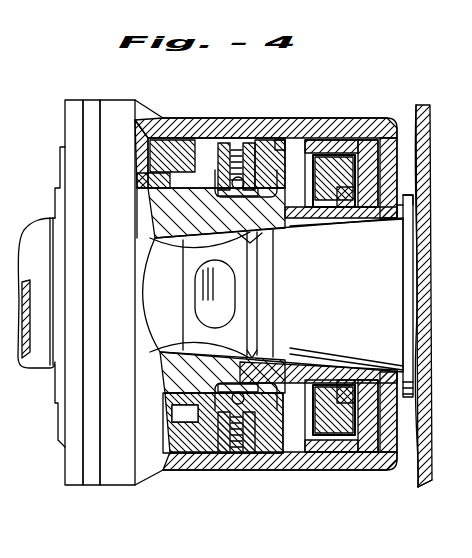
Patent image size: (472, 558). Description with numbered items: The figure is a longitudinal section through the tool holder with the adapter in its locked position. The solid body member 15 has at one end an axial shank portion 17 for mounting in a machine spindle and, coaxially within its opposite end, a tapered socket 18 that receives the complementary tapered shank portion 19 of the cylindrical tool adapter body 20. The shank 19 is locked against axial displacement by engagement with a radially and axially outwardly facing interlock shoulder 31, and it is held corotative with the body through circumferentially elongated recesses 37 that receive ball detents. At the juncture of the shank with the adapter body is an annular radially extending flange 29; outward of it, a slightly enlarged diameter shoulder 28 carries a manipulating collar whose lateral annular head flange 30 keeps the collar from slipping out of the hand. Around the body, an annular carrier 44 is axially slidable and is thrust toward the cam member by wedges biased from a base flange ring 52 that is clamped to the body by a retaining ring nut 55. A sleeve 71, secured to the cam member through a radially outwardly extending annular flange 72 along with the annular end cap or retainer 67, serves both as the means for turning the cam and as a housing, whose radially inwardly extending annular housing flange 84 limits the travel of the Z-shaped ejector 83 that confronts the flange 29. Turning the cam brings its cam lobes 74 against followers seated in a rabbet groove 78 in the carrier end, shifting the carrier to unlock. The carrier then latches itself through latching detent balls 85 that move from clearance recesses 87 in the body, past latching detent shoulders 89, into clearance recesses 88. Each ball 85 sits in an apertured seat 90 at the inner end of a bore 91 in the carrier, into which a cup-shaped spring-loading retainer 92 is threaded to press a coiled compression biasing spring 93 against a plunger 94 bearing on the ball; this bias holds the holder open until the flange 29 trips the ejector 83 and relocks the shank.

The annular end cap or retainer 67 is at (74, 113).
The radially outwardly extending annular flange 72 is at (91, 110).
The cam lobes 74 is at (146, 218).
The axial shank portion 17 is at (37, 356).
The solid body member 15 is at (140, 236).
The circumferentially elongated recesses 37 is at (207, 312).
The interlock shoulder 31 is at (250, 288).
The socket 18 is at (361, 226).
The tapered shank portion 19 is at (346, 324).
The cylindrical tool adapter body 20 is at (412, 242).
The annular radially extending flange 29 is at (425, 208).
The enlarged diameter shoulder 28 is at (430, 296).
The lateral annular head flange 30 is at (428, 466).
The annular housing flange 84 is at (404, 140).
The ejector 83 is at (357, 150).
The annular carrier 44 is at (273, 138).
The annular rabbet groove 78 is at (178, 138).
The latching detent balls 85 is at (228, 199).
The clearance recesses 87 is at (228, 198).
The clearance recesses 88 is at (292, 225).
The latching detent shoulders 89 is at (268, 240).
The apertured seat 90 is at (208, 140).
The bore 91 is at (229, 140).
The spring-loading retainer 92 is at (251, 140).
The coiled compression biasing spring 93 is at (250, 188).
The plunger 94 is at (274, 170).
The sleeve 71 is at (292, 474).
The base flange ring 52 is at (330, 425).
The retaining ring nut 55 is at (352, 445).